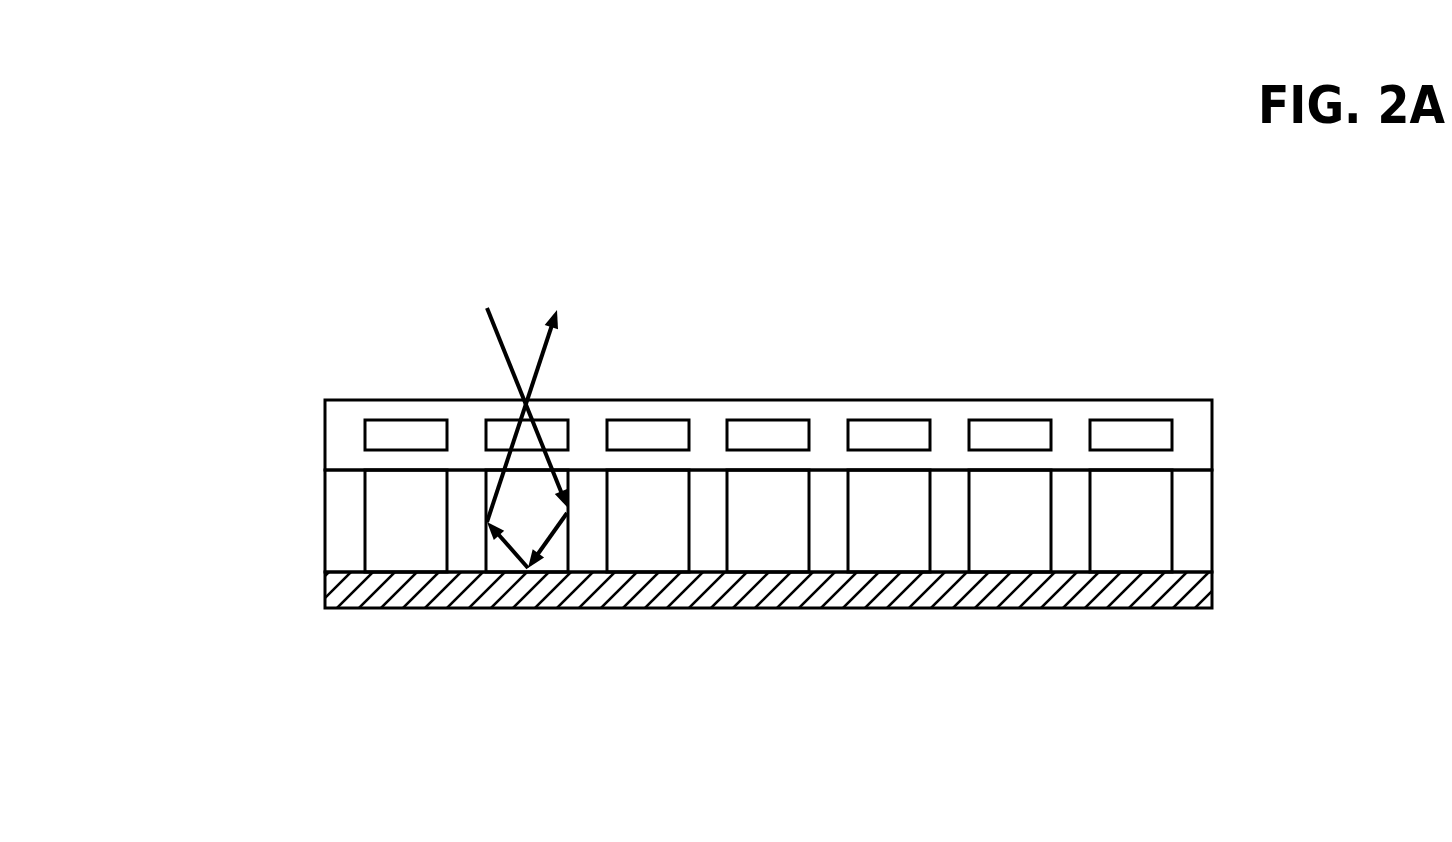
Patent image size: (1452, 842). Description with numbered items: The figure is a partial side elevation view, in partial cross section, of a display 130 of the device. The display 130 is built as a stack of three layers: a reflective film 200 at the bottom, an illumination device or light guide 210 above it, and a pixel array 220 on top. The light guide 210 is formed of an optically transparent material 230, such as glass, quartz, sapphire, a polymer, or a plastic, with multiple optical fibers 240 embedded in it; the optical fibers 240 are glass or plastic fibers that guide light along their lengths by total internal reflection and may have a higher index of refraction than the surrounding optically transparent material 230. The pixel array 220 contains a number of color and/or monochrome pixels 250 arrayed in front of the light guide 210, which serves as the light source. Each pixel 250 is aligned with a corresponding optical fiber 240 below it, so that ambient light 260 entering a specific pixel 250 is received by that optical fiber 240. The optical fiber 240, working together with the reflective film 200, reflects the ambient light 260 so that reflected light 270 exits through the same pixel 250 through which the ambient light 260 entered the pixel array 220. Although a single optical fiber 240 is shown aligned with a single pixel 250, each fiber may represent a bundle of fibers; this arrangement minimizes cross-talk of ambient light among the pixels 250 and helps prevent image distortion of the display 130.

The display 130 is at (208, 103).
The reflective film 200 is at (1213, 590).
The light guide 210 is at (1213, 500).
The pixel array 220 is at (1213, 435).
The optically transparent material 230 is at (347, 530).
The optical fiber 240 is at (387, 491).
The pixel 250 is at (1012, 430).
The ambient light 260 is at (510, 364).
The reflected light 270 is at (553, 336).